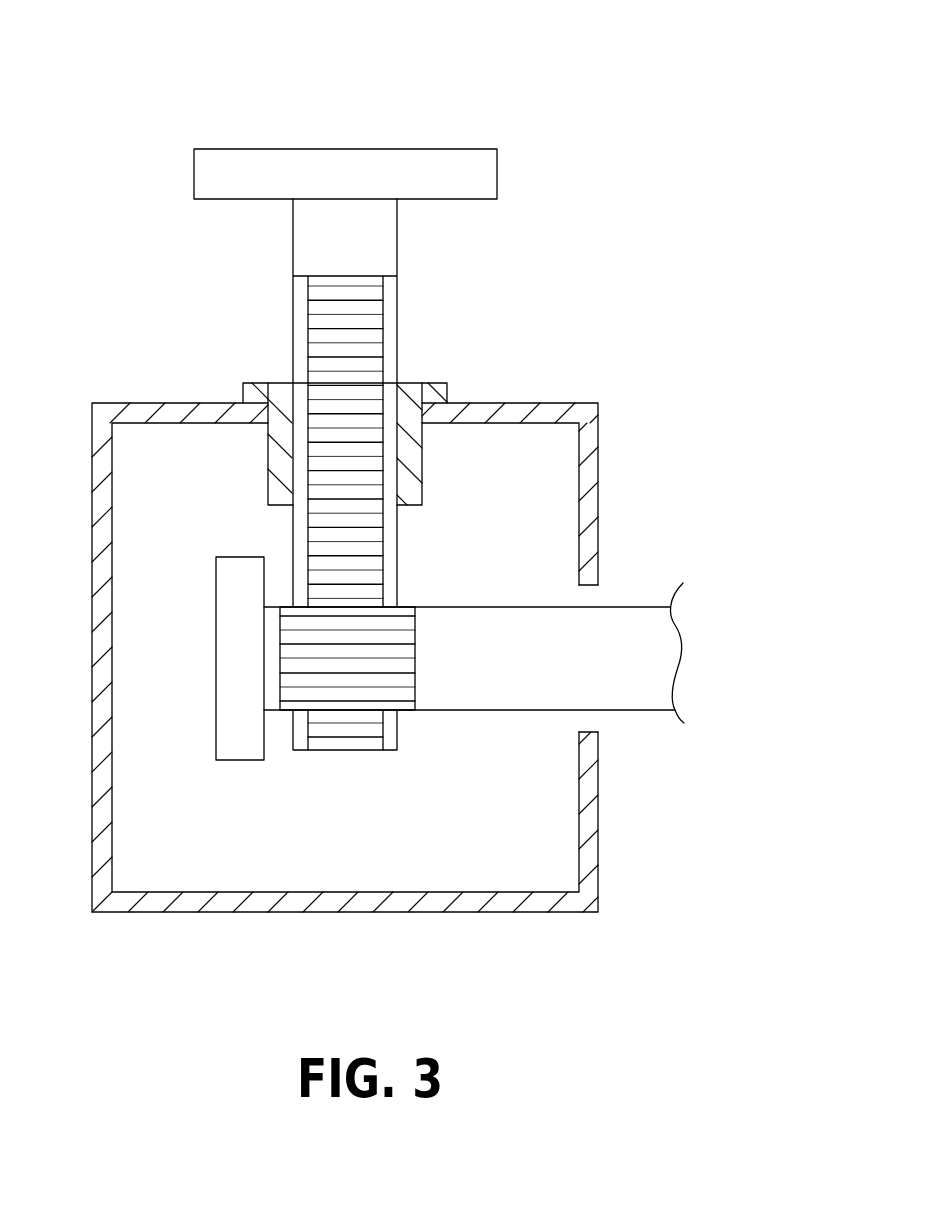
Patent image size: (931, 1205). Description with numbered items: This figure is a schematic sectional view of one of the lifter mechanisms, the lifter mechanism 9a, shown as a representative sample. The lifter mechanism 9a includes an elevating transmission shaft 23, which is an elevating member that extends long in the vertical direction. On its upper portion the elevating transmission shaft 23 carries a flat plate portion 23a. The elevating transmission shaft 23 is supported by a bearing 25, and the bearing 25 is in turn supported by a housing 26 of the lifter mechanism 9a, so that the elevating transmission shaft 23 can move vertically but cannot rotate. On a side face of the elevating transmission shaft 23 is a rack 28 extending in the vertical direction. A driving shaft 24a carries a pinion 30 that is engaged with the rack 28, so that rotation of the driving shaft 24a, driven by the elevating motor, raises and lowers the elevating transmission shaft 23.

The lifter mechanism 9a is at (542, 95).
The flat plate portion 23a is at (347, 173).
The elevating transmission shaft 23 is at (395, 347).
The bearing 25 is at (422, 466).
The housing 26 is at (588, 472).
The rack 28 is at (355, 542).
The driving shaft 24a is at (654, 656).
The pinion 30 is at (377, 672).